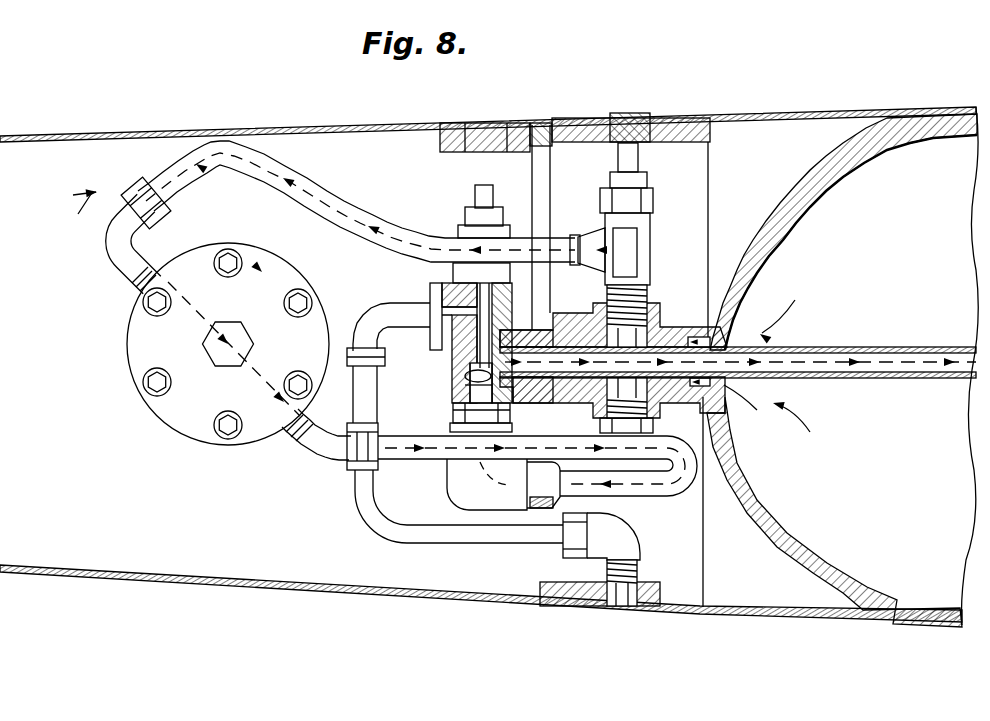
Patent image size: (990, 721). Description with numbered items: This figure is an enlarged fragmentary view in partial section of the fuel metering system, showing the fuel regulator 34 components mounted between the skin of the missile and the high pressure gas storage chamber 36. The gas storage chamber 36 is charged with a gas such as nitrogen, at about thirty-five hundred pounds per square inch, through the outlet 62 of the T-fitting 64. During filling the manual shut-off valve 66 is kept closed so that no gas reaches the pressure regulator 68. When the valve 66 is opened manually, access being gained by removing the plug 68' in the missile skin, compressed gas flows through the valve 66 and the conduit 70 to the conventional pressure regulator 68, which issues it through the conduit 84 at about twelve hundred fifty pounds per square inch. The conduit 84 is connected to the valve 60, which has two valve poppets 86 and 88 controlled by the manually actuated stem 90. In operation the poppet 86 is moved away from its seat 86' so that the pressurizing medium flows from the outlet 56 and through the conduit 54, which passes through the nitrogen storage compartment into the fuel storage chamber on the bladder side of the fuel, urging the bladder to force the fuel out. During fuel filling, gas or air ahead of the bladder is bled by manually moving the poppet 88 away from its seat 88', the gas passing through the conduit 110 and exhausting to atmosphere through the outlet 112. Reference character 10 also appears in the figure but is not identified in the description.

The fuel flow path 10 is at (188, 329).
The fuel regulator 34 is at (258, 478).
The high pressure gas storage chamber 36 is at (892, 600).
The conduit 54 is at (858, 380).
The outlet 56 is at (525, 392).
The valve 60 is at (462, 372).
The outlet 62 is at (602, 426).
The T-fitting 64 is at (672, 400).
The manual shut-off valve 66 is at (645, 232).
The pressure regulator 68 is at (228, 318).
The plug 68' is at (630, 96).
The conduit 70 is at (342, 212).
The conduit 84 is at (355, 472).
The valve poppet 86 is at (538, 348).
The valve seat 86' is at (459, 419).
The valve poppet 88 is at (484, 333).
The valve seat 88' is at (449, 366).
The manually actuated stem 90 is at (474, 196).
The conduit 110 is at (468, 543).
The outlet 112 is at (619, 607).